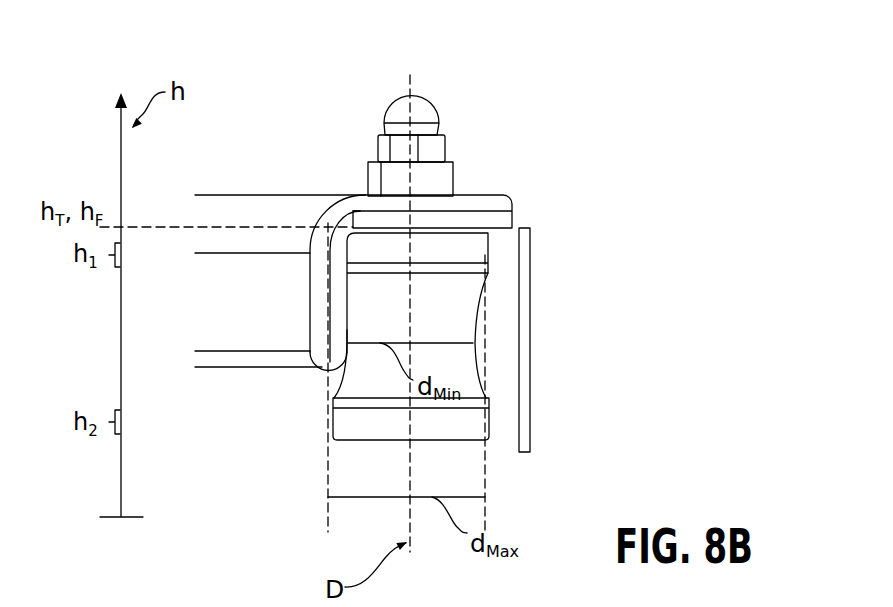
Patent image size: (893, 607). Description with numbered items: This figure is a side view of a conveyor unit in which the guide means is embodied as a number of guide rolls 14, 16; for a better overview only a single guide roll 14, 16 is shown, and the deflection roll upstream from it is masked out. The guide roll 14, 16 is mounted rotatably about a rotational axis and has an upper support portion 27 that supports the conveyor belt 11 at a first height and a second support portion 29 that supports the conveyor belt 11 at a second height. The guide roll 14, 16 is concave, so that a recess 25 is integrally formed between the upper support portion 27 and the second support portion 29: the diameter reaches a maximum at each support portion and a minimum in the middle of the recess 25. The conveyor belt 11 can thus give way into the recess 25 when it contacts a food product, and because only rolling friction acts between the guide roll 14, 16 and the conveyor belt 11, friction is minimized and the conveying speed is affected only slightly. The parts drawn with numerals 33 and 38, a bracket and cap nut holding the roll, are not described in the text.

The conveyor belt 11 is at (530, 363).
The guide roll 14 is at (276, 349).
The guide roll 16 is at (312, 413).
The recess 25 is at (459, 327).
The upper support portion 27 is at (487, 258).
The second support portion 29 is at (483, 427).
The bracket 33 is at (448, 202).
The cap nut 38 is at (422, 113).